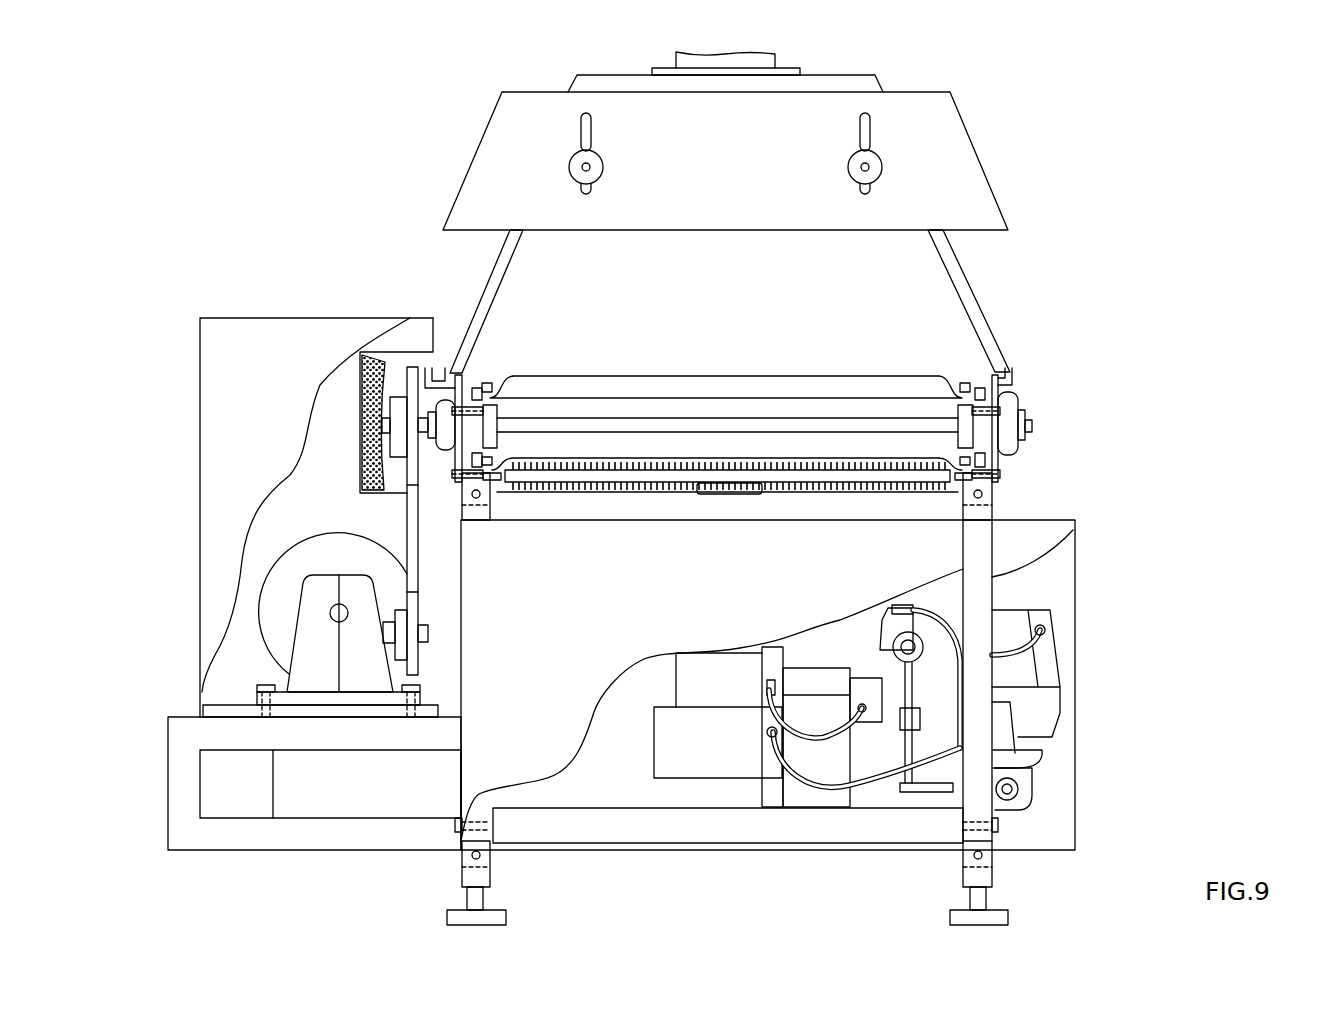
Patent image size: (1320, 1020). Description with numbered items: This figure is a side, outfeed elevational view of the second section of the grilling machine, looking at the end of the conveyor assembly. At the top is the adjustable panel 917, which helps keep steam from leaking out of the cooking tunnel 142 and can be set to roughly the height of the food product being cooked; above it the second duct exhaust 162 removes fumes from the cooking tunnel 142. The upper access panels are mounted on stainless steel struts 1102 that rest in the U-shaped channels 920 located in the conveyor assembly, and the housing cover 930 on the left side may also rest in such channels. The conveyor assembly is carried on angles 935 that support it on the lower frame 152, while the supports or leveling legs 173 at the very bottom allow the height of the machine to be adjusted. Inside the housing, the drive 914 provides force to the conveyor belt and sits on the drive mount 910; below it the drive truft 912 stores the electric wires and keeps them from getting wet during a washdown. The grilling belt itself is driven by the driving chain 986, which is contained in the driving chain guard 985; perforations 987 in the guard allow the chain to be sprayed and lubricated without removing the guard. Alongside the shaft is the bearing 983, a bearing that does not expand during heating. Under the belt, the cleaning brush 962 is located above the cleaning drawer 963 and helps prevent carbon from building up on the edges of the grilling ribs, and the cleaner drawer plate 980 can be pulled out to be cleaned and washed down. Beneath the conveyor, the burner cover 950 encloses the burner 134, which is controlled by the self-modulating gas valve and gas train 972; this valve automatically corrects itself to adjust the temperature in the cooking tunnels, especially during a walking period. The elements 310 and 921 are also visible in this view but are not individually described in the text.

The second duct exhaust 162 is at (770, 60).
The adjustable panel 917 is at (515, 122).
The stainless steel struts 1102 is at (502, 268).
The U-shaped channels 920 is at (442, 366).
The right bracket 921 is at (1015, 372).
The perforations 987 is at (358, 378).
The driving chain guard 985 is at (372, 360).
The cooking tunnel 142 is at (725, 442).
The roller 310 is at (917, 373).
The cleaning brush 962 is at (830, 475).
The cleaner drawer plate 980 is at (728, 490).
The drive mount 910 is at (1012, 410).
The cleaning drawer 963 is at (980, 477).
The housing cover 930 is at (200, 506).
The bearing 983 is at (376, 458).
The angles 935 is at (494, 505).
The burner cover 950 is at (1003, 542).
The drive 914 is at (277, 600).
The driving chain 986 is at (420, 584).
The burner 134 is at (822, 705).
The self-modulating gas valve and gas train 972 is at (1040, 712).
The drive truft 912 is at (222, 795).
The frame 152 is at (467, 858).
The supports or leveling legs 173 is at (490, 917).